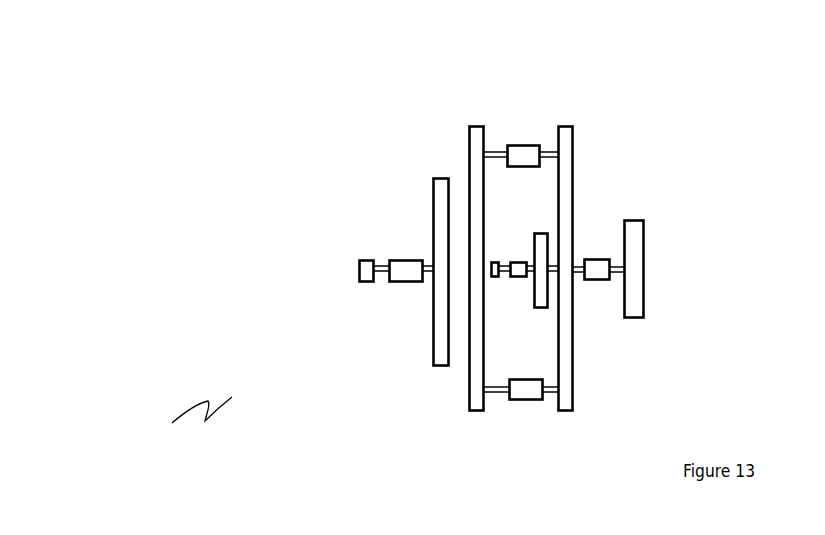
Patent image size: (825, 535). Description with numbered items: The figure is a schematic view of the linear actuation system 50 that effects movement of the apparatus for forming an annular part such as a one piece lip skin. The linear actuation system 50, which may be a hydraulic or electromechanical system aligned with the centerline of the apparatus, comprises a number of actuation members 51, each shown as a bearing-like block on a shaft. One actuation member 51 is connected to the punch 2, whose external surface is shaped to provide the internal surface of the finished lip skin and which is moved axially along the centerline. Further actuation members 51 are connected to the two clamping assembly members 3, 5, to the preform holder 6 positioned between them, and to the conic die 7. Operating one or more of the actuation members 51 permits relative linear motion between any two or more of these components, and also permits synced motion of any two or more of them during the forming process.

The punch 2 is at (440, 183).
The clamping assembly member 3 is at (477, 142).
The clamping assembly member 5 is at (568, 137).
The preform holder 6 is at (540, 253).
The conic die 7 is at (640, 267).
The linear actuation system 50 is at (185, 424).
The actuation member 51 is at (523, 155).